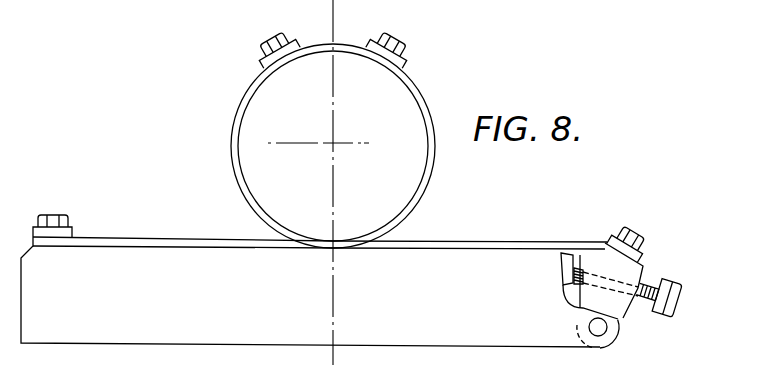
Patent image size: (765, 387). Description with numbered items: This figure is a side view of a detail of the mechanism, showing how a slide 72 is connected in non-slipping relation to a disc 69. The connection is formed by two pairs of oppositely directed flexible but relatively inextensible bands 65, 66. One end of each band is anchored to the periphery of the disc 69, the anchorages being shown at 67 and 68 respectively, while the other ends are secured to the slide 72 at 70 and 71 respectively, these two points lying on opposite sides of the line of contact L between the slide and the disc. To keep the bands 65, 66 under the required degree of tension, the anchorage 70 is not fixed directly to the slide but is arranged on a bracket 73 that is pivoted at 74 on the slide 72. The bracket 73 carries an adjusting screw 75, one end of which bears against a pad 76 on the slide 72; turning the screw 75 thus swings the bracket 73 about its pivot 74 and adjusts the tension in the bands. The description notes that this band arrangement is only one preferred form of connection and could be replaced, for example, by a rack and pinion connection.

The band 65 is at (487, 240).
The band 66 is at (175, 237).
The anchorage 67 is at (263, 58).
The anchorage 68 is at (404, 61).
The disc 69 is at (254, 104).
The anchorage 70 is at (607, 240).
The anchorage 71 is at (73, 233).
The slide 72 is at (467, 341).
The bracket 73 is at (638, 268).
The pivot 74 is at (602, 335).
The adjusting screw 75 is at (667, 318).
The pad 76 is at (567, 252).
The line of contact L is at (333, 248).